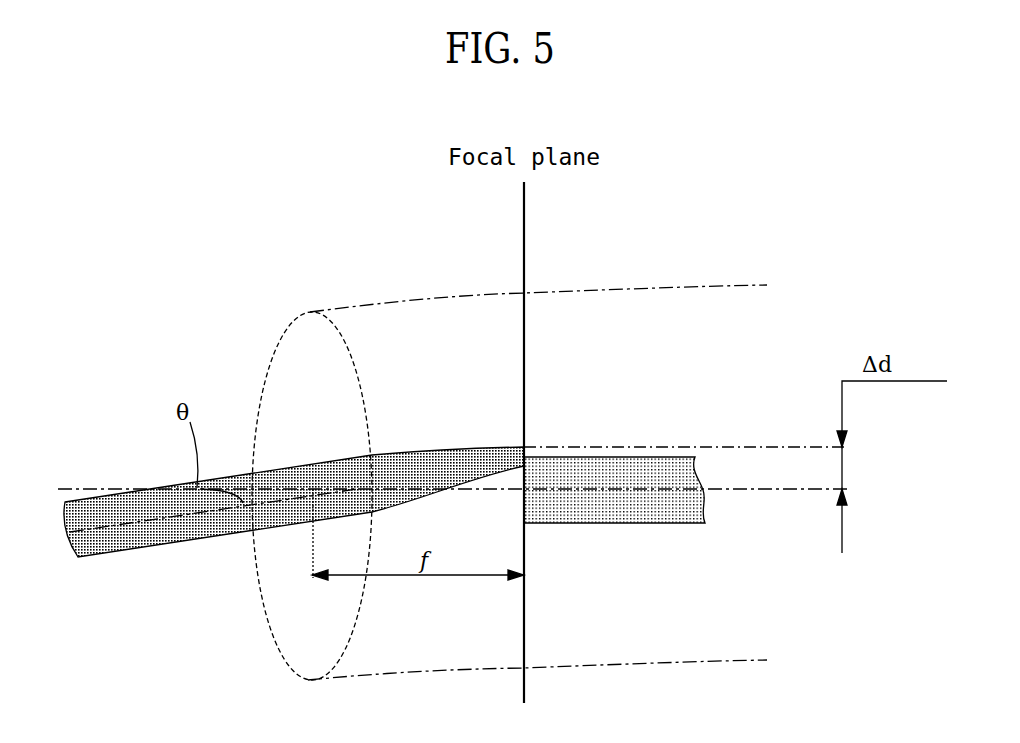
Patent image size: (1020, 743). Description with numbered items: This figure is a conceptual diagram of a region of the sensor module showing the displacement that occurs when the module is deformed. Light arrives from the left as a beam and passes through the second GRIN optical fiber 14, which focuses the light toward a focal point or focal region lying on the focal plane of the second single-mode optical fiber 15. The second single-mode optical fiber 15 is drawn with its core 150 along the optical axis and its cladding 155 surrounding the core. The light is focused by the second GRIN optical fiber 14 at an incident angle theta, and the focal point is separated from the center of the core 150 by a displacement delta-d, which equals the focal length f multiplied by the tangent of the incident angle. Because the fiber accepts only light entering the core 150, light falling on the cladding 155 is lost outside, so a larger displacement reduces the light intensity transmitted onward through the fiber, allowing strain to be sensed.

The second GRIN optical fiber 14 is at (392, 305).
The second single-mode optical fiber 15 is at (537, 437).
The cladding of the second single-mode optical fiber 155 is at (624, 292).
The core of the second single-mode optical fiber 150 is at (627, 457).